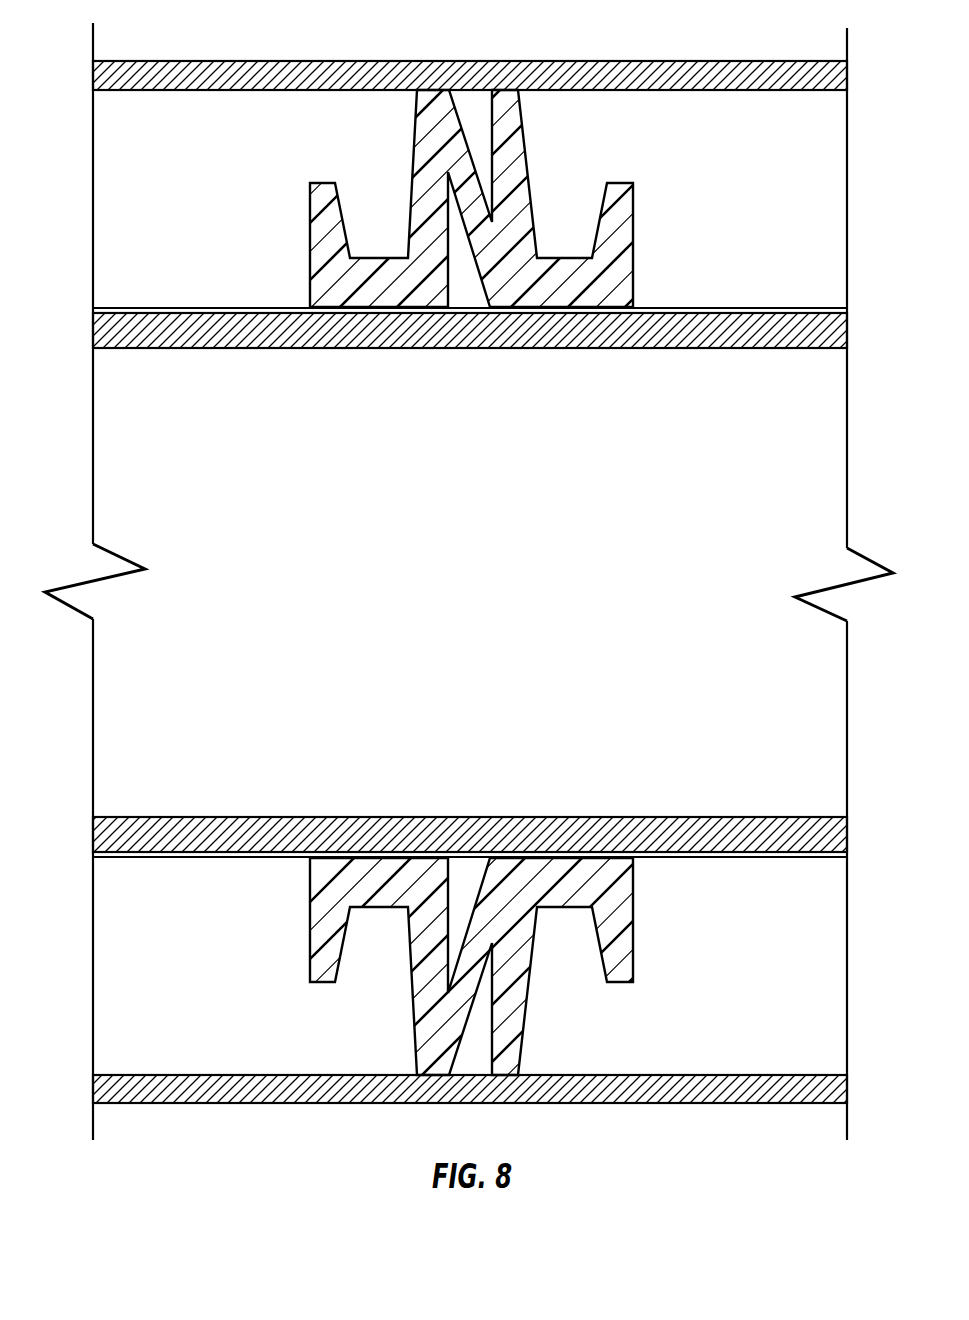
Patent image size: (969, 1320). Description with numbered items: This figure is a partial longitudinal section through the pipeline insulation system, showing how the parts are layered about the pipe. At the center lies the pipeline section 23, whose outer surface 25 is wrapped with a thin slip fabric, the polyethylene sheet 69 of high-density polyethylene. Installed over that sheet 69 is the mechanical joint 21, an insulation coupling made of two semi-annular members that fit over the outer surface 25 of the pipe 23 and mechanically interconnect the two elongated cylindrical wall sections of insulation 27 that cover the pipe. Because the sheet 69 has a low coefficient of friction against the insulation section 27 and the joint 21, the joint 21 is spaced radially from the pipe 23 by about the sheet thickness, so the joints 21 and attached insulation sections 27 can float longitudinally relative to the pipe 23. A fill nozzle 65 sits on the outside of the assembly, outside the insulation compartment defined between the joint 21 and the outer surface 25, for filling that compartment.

The mechanical joint 21 is at (263, 127).
The pipeline section 23 is at (455, 598).
The outer surface 25 is at (825, 316).
The insulation section 27 is at (107, 203).
The fill nozzle 65 is at (647, 72).
The polyethylene sheet 69 is at (103, 306).